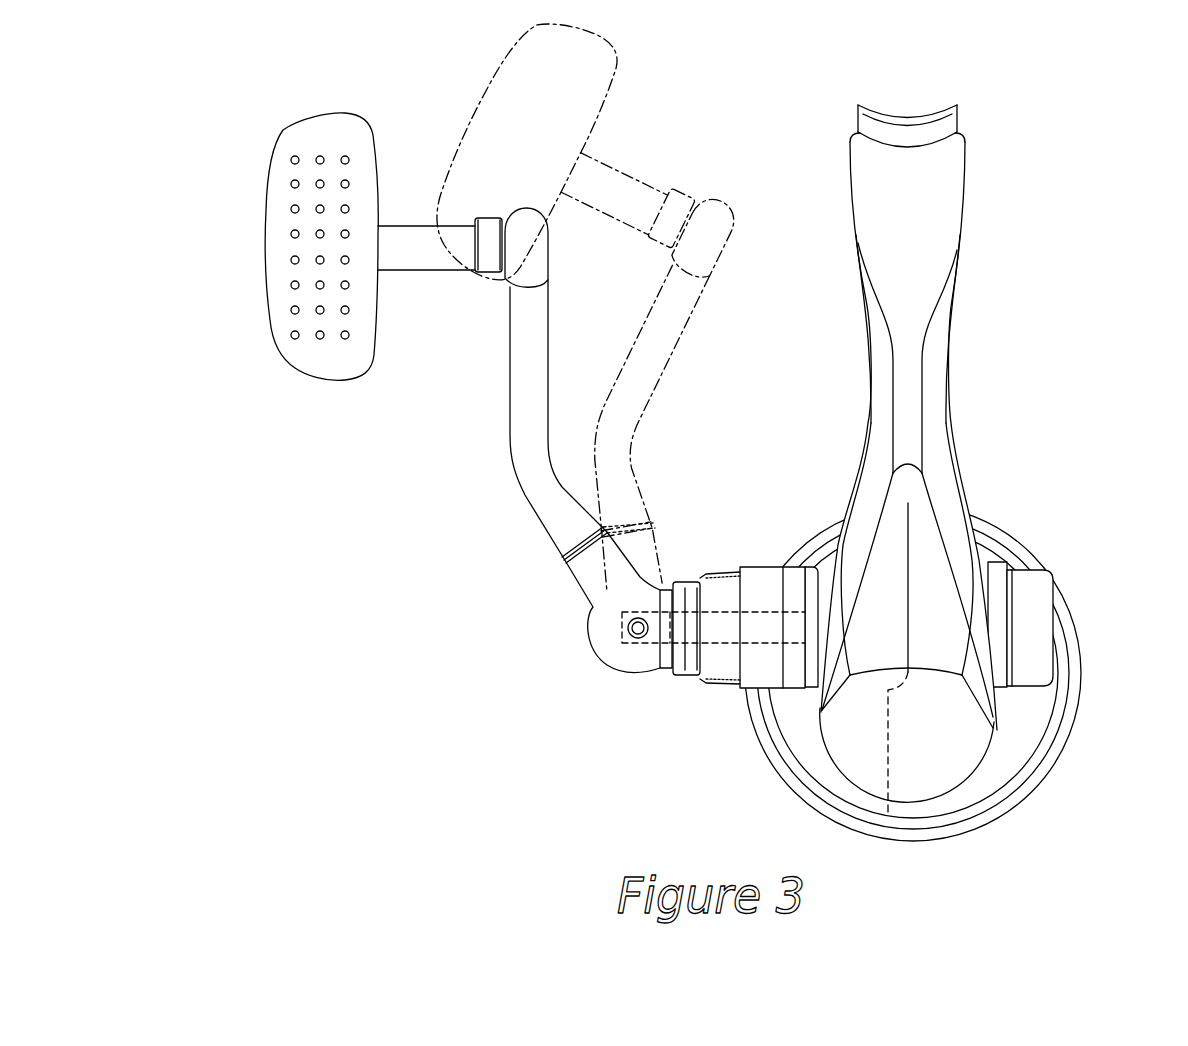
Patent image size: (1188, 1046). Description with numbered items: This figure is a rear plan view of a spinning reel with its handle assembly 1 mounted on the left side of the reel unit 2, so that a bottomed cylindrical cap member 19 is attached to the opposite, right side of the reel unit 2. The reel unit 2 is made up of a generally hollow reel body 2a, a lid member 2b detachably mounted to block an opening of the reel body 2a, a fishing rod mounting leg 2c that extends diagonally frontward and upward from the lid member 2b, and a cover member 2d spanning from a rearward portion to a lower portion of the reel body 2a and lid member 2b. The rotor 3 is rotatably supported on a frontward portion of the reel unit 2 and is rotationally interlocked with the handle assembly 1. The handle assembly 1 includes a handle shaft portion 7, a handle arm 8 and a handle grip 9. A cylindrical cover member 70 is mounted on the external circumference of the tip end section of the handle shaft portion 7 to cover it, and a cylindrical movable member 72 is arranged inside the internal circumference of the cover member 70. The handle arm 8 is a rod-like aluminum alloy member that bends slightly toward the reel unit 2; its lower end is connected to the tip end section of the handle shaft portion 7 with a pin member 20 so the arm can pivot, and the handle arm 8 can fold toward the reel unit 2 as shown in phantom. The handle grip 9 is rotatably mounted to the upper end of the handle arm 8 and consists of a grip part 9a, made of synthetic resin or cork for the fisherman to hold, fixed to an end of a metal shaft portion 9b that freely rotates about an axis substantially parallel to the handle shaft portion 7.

The handle assembly 1 is at (270, 139).
The handle grip 9 is at (277, 225).
The grip part 9a is at (329, 352).
The shaft portion 9b is at (423, 262).
The handle arm 8 is at (532, 472).
The pin member 20 is at (640, 636).
The handle shaft portion 7 is at (712, 637).
The movable member 72 is at (700, 578).
The cover member 70 is at (760, 580).
The reel unit 2 is at (1036, 385).
The reel body 2a is at (916, 500).
The lid member 2b is at (880, 483).
The fishing rod mounting leg 2c is at (912, 297).
The cover member 2d is at (867, 722).
The rotor 3 is at (1044, 790).
The cap member 19 is at (1038, 607).